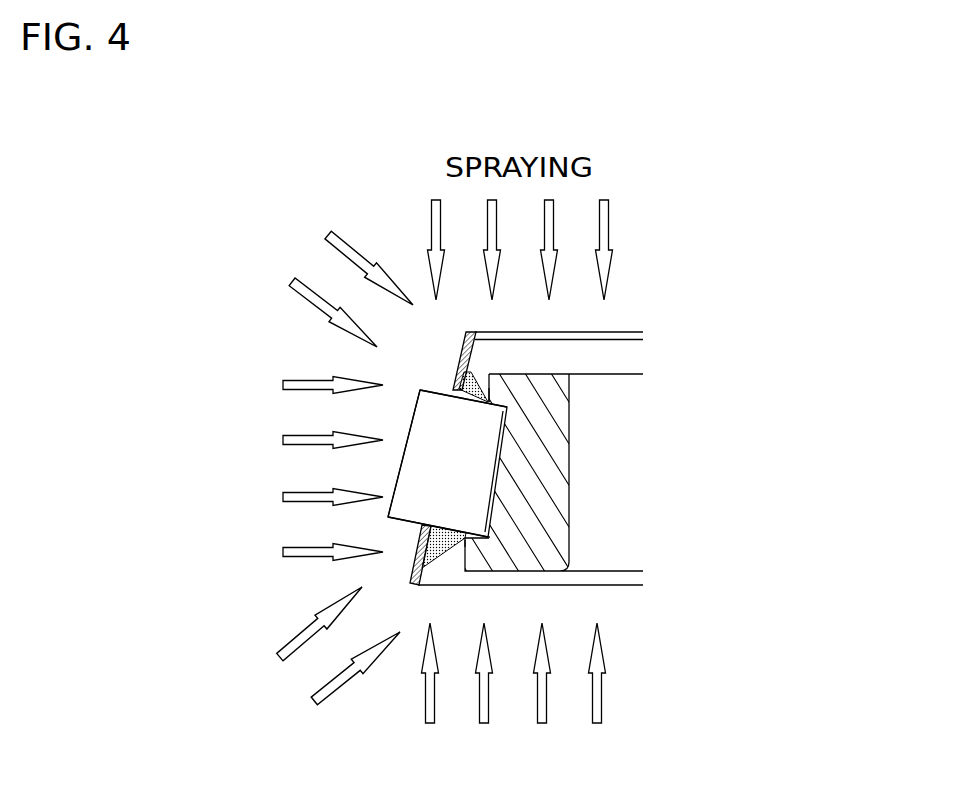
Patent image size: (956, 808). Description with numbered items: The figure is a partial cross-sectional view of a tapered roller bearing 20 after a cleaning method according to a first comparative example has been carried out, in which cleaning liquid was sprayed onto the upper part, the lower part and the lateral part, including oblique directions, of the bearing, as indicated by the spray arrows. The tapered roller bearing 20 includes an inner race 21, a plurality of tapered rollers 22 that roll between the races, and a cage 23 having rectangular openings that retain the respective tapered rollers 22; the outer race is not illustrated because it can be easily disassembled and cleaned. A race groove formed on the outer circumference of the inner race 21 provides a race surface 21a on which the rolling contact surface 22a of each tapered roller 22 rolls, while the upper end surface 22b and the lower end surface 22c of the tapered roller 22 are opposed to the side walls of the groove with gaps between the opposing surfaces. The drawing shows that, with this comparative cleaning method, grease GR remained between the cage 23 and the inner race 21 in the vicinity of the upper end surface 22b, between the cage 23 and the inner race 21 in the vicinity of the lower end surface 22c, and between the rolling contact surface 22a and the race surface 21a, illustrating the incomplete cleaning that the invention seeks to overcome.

The tapered roller bearing 20 is at (657, 320).
The inner race 21 is at (570, 507).
The race surface 21a is at (495, 517).
The tapered roller 22 is at (402, 470).
The rolling contact surface 22a is at (477, 482).
The upper end surface 22b is at (430, 390).
The lower end surface 22c is at (412, 527).
The cage 23 is at (458, 347).
The grease GR is at (489, 388).